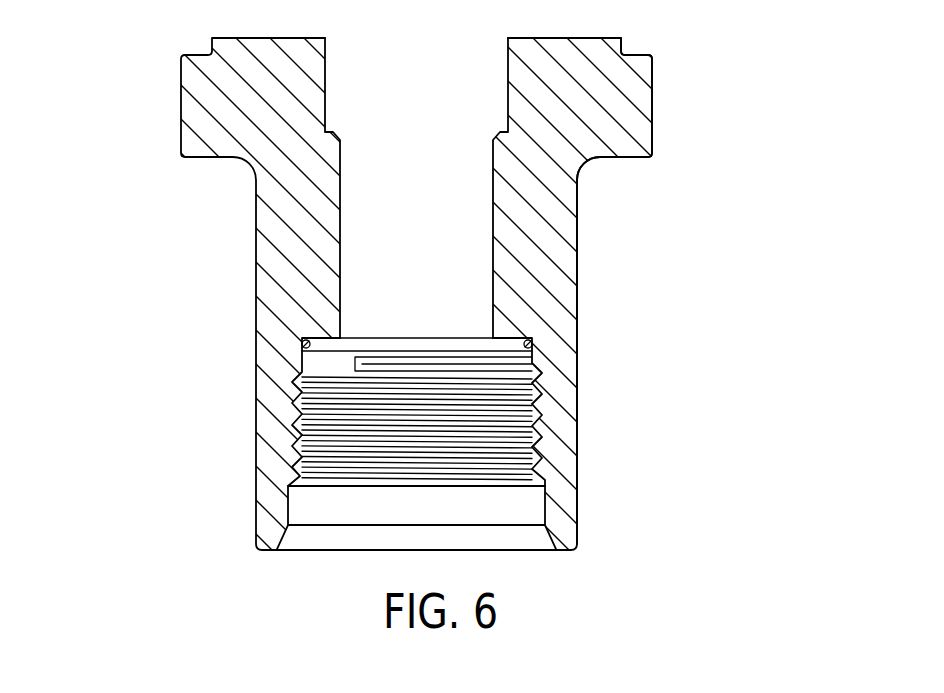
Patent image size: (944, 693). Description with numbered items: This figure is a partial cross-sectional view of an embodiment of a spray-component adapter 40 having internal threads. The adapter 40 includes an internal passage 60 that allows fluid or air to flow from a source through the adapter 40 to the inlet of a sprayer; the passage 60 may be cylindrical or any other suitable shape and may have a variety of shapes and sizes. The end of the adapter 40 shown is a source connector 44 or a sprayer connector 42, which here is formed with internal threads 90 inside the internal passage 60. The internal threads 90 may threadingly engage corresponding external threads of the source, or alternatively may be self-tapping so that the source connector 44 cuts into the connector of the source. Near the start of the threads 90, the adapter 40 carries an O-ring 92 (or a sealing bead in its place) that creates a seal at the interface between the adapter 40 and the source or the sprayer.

The spray-component adapter 40 is at (472, 346).
The sprayer connector 42 is at (636, 291).
The source connector 44 is at (634, 300).
The internal passage 60 is at (340, 257).
The internal threads 90 is at (297, 401).
The O-ring 92 is at (458, 345).